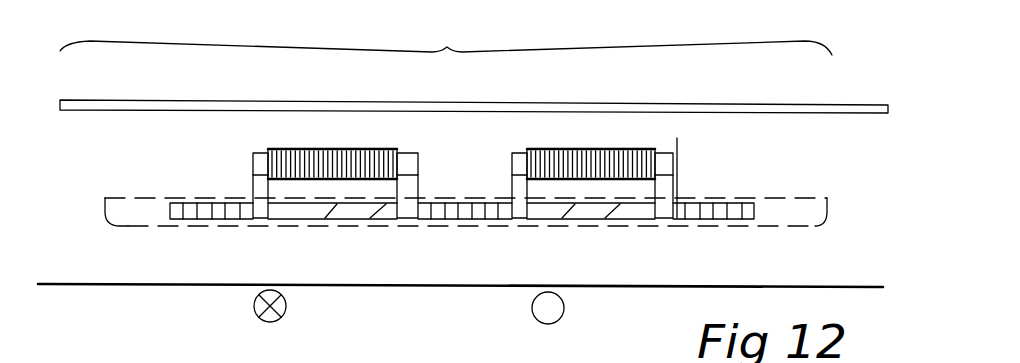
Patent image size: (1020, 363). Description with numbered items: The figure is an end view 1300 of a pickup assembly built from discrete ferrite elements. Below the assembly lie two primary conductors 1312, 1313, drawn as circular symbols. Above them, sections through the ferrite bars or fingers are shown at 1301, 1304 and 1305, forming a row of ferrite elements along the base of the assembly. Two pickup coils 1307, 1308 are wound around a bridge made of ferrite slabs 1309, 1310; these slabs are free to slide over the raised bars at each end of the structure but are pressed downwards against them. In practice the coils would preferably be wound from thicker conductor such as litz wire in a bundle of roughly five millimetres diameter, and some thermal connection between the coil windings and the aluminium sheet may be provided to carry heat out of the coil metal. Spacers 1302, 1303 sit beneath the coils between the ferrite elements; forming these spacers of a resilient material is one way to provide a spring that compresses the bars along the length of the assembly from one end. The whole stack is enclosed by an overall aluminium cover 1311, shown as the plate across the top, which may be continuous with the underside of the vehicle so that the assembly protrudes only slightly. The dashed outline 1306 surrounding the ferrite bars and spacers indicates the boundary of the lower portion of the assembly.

The view 1300 is at (446, 34).
The ferrite bar section 1301 is at (170, 205).
The spacer 1302 is at (358, 218).
The spacer 1303 is at (603, 217).
The ferrite bar section 1304 is at (473, 217).
The ferrite bar section 1305 is at (735, 219).
The housing outline 1306 is at (876, 247).
The pickup coil 1307 is at (370, 149).
The pickup coil 1308 is at (741, 140).
The ferrite slab 1309 is at (252, 162).
The ferrite slab 1310 is at (665, 167).
The aluminium cover 1311 is at (878, 114).
The primary conductor 1312 is at (328, 353).
The primary conductor 1313 is at (604, 353).